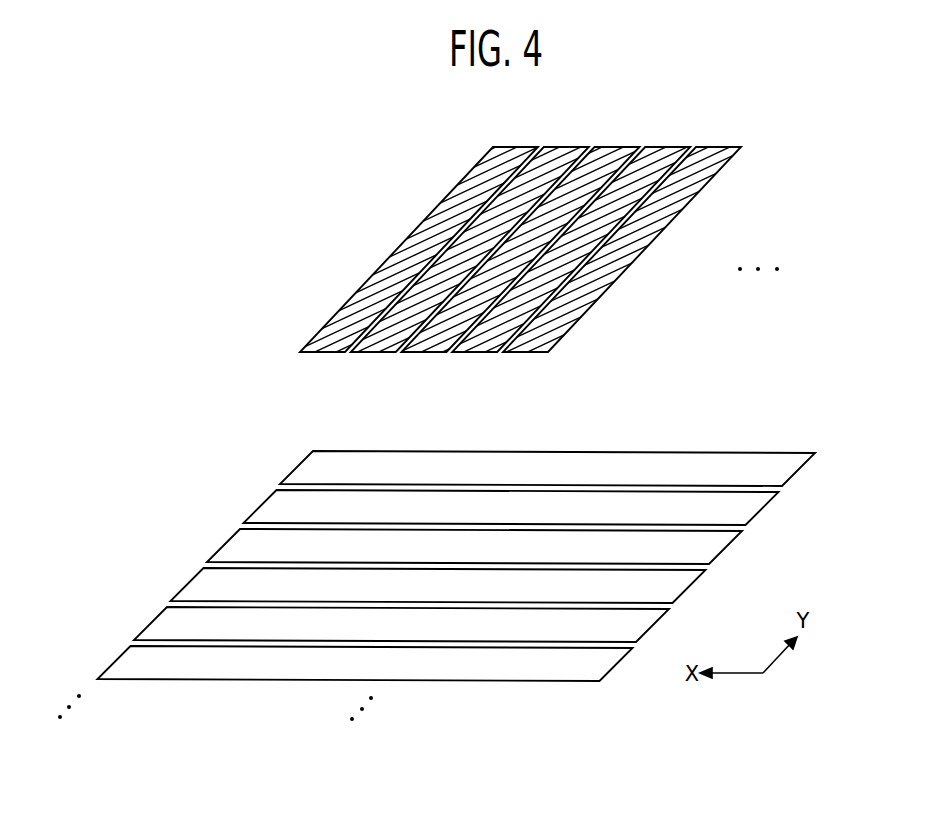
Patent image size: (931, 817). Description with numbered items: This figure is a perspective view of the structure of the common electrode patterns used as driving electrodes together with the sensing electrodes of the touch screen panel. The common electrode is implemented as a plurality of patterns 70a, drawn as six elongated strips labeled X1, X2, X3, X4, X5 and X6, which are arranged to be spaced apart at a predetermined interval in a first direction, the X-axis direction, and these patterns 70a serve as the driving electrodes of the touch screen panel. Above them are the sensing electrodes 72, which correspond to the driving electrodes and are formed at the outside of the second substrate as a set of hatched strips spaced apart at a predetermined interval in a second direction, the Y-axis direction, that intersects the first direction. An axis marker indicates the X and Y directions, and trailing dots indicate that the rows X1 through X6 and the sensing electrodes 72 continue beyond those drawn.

The sensing electrodes 72 is at (566, 148).
The patterns 70a is at (450, 535).
The X1 pattern X1 is at (540, 467).
The X2 pattern X2 is at (504, 506).
The X3 pattern X3 is at (467, 545).
The X4 pattern X4 is at (431, 584).
The X5 pattern X5 is at (394, 623).
The X6 pattern X6 is at (358, 662).